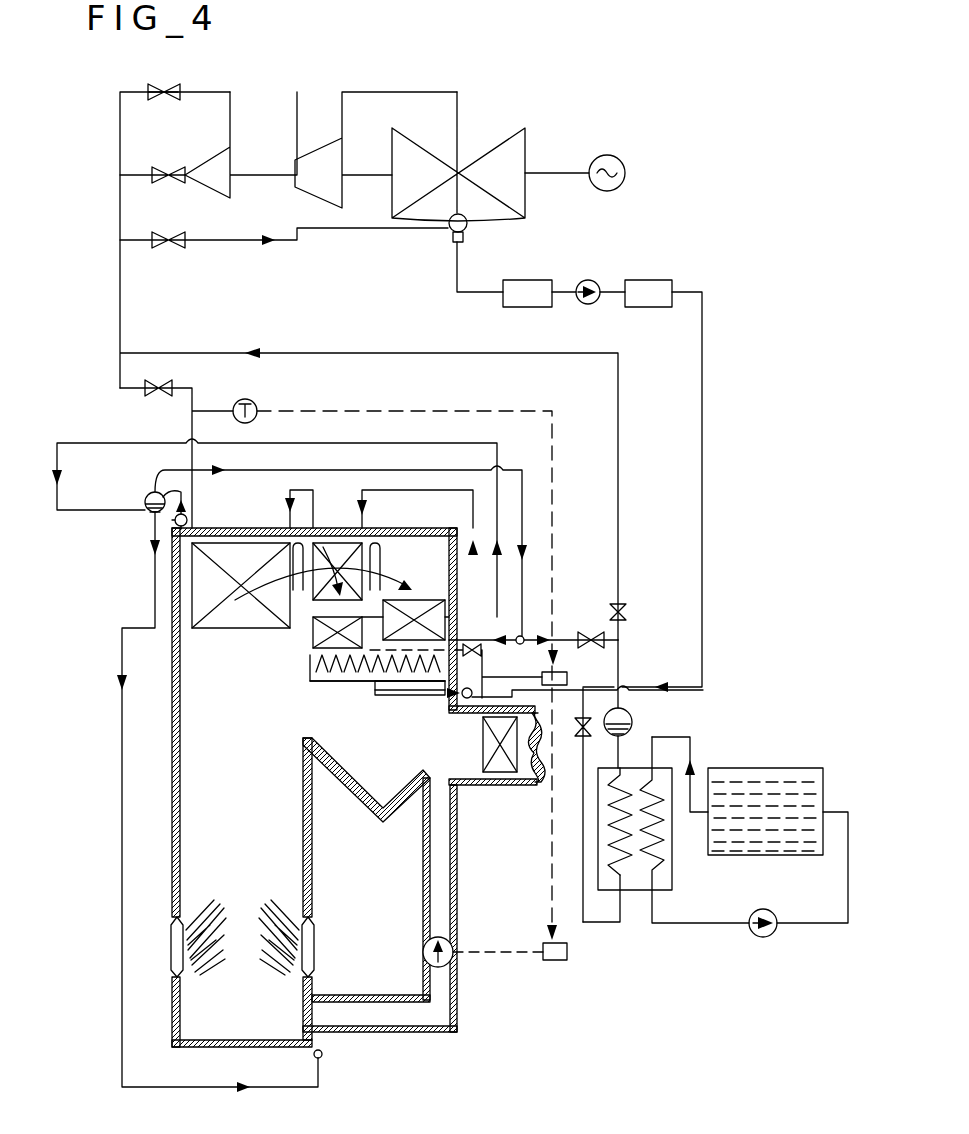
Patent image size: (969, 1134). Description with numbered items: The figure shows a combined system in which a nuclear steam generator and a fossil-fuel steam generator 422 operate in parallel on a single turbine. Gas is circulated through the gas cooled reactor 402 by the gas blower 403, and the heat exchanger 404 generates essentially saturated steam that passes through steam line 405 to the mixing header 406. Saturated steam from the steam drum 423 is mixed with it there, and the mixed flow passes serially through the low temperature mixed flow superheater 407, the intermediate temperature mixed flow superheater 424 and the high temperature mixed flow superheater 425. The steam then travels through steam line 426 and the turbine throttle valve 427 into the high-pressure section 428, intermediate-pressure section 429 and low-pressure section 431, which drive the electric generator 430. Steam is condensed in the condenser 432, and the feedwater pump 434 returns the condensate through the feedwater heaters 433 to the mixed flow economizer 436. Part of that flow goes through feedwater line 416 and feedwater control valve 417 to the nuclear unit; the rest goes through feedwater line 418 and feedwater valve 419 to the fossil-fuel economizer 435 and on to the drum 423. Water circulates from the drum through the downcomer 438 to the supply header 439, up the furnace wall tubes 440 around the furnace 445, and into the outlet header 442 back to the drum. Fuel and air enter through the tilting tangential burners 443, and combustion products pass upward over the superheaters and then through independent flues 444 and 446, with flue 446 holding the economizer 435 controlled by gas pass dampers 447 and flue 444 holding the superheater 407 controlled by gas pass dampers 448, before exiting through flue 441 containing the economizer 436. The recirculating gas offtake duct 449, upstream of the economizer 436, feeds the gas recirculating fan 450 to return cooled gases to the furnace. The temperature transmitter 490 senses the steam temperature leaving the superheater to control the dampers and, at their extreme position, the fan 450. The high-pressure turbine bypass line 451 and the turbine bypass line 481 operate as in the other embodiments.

The gas cooled reactor 402 is at (768, 770).
The gas blower 403 is at (765, 938).
The heat exchanger 404 is at (665, 880).
The steam line 405 is at (585, 630).
The mixing header 406 is at (524, 636).
The low temperature mixed flow superheater 407 is at (435, 592).
The feedwater line 416 is at (605, 922).
The feedwater control valve 417 is at (550, 718).
The feedwater line 418 is at (467, 698).
The feedwater valve 419 is at (495, 668).
The fossil-fuel steam generator 422 is at (172, 743).
The steam drum 423 is at (140, 512).
The intermediate temperature mixed flow superheater 424 is at (343, 533).
The high temperature mixed flow superheater 425 is at (195, 578).
The steam line 426 is at (122, 305).
The turbine throttle valve 427 is at (162, 170).
The high-pressure section 428 is at (225, 152).
The intermediate-pressure section 429 is at (330, 153).
The electric generator 430 is at (620, 165).
The low-pressure section 431 is at (440, 140).
The condenser 432 is at (470, 225).
The feedwater heaters 433 is at (530, 307).
The feedwater pump 434 is at (592, 280).
The fossil-fuel economizer 435 is at (313, 638).
The mixed flow economizer 436 is at (483, 762).
The downcomer 438 is at (122, 648).
The supply header 439 is at (322, 1055).
The furnace wall tubes 440 is at (197, 789).
The flue 441 is at (531, 760).
The outlet header 442 is at (190, 516).
The tilting tangential burners 443 is at (320, 921).
The flue 444 is at (533, 630).
The furnace 445 is at (260, 853).
The flue 446 is at (313, 659).
The gas pass dampers 447 is at (308, 668).
The gas pass dampers 448 is at (430, 697).
The recirculating gas offtake duct 449 is at (445, 864).
The gas recirculating fan 450 is at (423, 950).
The high-pressure turbine bypass line 451 is at (183, 92).
The turbine bypass line 481 is at (245, 243).
The temperature transmitter 490 is at (247, 400).